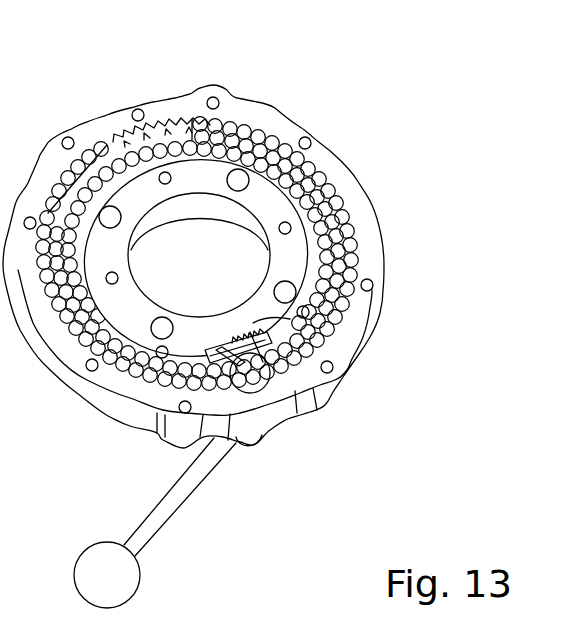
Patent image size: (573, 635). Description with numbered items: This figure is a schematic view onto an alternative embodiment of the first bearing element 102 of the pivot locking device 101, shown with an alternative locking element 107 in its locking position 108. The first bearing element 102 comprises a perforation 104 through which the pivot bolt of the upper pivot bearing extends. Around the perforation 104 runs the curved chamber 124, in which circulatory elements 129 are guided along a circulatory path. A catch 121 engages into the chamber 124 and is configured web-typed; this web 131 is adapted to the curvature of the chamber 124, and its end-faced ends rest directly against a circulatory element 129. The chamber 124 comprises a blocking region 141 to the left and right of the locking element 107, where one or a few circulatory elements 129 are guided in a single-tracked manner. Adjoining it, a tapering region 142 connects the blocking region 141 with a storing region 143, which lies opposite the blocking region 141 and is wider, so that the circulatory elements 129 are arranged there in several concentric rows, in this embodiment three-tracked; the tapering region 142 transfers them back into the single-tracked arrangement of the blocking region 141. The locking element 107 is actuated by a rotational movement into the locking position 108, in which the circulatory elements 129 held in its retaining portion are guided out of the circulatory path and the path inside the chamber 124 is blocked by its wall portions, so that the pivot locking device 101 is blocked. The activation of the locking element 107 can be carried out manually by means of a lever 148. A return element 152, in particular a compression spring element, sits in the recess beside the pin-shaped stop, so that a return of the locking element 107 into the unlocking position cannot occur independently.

The pivot locking device 101 is at (413, 150).
The first bearing element 102 is at (328, 113).
The perforation 104 is at (155, 207).
The locking element 107 is at (262, 385).
The locking position 108 is at (259, 405).
The catch 121 is at (151, 104).
The chamber 124 is at (343, 194).
The circulatory element 129 is at (352, 251).
The web 131 is at (133, 130).
The blocking region 141 is at (306, 374).
The tapering region 142 is at (375, 267).
The storing region 143 is at (251, 106).
The lever 148 is at (173, 542).
The return element 152 is at (290, 319).